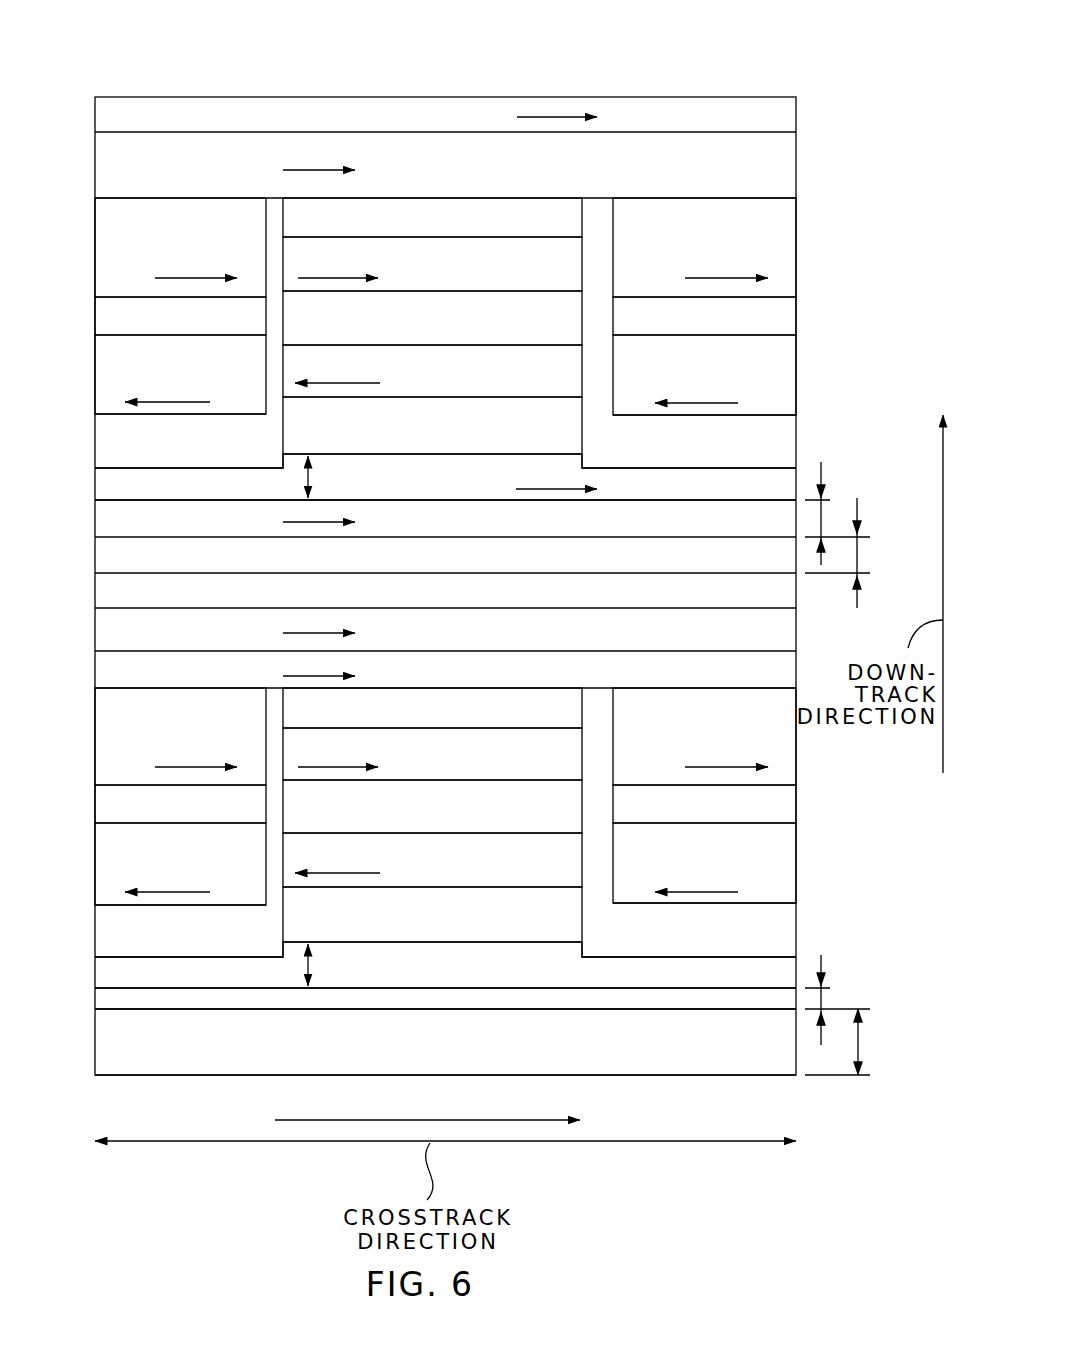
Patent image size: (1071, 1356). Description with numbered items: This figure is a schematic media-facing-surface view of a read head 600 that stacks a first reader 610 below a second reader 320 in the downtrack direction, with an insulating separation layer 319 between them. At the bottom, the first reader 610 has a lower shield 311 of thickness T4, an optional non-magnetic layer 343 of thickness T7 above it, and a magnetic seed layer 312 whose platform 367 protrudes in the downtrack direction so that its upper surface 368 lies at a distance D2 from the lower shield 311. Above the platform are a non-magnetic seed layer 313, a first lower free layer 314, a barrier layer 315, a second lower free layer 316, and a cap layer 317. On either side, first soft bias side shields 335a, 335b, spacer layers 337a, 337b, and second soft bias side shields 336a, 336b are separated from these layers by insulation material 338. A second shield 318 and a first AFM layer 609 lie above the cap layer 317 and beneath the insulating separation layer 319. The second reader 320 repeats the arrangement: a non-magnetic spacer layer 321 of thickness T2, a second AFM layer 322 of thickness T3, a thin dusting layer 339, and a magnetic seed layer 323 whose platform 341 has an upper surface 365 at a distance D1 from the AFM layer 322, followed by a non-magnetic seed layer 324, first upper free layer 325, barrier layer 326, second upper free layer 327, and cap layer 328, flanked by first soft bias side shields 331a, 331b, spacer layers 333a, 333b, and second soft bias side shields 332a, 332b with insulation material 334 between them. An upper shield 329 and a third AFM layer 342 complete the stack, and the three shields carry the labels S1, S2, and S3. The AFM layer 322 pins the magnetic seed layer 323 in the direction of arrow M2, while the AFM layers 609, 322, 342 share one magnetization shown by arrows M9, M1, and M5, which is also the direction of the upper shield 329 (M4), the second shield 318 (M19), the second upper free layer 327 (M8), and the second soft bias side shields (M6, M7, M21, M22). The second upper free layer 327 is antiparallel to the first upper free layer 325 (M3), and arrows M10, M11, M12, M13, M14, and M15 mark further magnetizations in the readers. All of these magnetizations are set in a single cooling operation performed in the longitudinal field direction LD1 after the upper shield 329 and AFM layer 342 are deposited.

The read head 600 is at (147, 70).
The second reader 320 is at (410, 327).
The first reader 610 is at (409, 815).
The AFM layer 342 is at (424, 123).
The upper shield 329 is at (424, 176).
The cap layer 328 is at (489, 231).
The second upper free layer 327 is at (489, 277).
The barrier layer 326 is at (489, 329).
The first upper free layer 325 is at (489, 381).
The non-magnetic seed layer 324 is at (489, 434).
The magnetic seed layer 323 is at (424, 489).
The AFM layer 322 is at (424, 528).
The non-magnetic spacer layer 321 is at (424, 566).
The insulating separation layer 319 is at (424, 601).
The AFM layer 609 is at (424, 638).
The second shield 318 is at (424, 679).
The cap layer 317 is at (489, 718).
The second lower free layer 316 is at (489, 765).
The barrier layer 315 is at (489, 817).
The first lower free layer 314 is at (489, 870).
The non-magnetic seed layer 313 is at (489, 921).
The magnetic seed layer 312 is at (525, 978).
The non-magnetic layer 343 is at (113, 1001).
The lower shield 311 is at (424, 1054).
The dusting layer 339 is at (107, 500).
The second soft bias side shield 332a is at (144, 239).
The spacer layer 333a is at (147, 326).
The first soft bias side shield 331a is at (144, 363).
The insulation material 334 is at (151, 451).
The second soft bias side shield 332b is at (672, 239).
The spacer layer 333b is at (672, 326).
The first soft bias side shield 331b is at (672, 363).
The second soft bias side shield 336a is at (149, 727).
The spacer layer 337a is at (149, 814).
The first soft bias side shield 335a is at (147, 851).
The insulation material 338 is at (151, 941).
The second soft bias side shield 336b is at (677, 727).
The spacer layer 337b is at (677, 814).
The first soft bias side shield 335b is at (677, 851).
The upper surface 365 is at (297, 452).
The platform 341 is at (564, 466).
The platform 367 is at (297, 942).
The upper surface 368 is at (567, 943).
The magnetization arrow M1 is at (305, 522).
The magnetization arrow M2 is at (556, 489).
The magnetization arrow M3 is at (360, 383).
The magnetization arrow M4 is at (315, 170).
The magnetization arrow M5 is at (543, 117).
The magnetization arrow M6 is at (188, 278).
The magnetization arrow M7 is at (715, 278).
The magnetization arrow M8 is at (352, 278).
The magnetization arrow M9 is at (298, 633).
The magnetization arrow M10 is at (170, 402).
The magnetization arrow M11 is at (697, 403).
The magnetization arrow M12 is at (170, 892).
The magnetization arrow M13 is at (697, 892).
The magnetization arrow M14 is at (352, 767).
The magnetization arrow M15 is at (360, 873).
The magnetization arrow M19 is at (298, 676).
The magnetization direction M21 is at (188, 767).
The magnetization direction M22 is at (715, 767).
The first shield S1 is at (534, 1048).
The second shield S2 is at (534, 672).
The third shield S3 is at (534, 170).
The thickness T2 is at (858, 552).
The thickness T3 is at (823, 515).
The thickness T4 is at (859, 1042).
The thickness T7 is at (823, 995).
The distance D1 is at (315, 480).
The distance D2 is at (315, 968).
The longitudinal field direction LD1 is at (432, 1120).